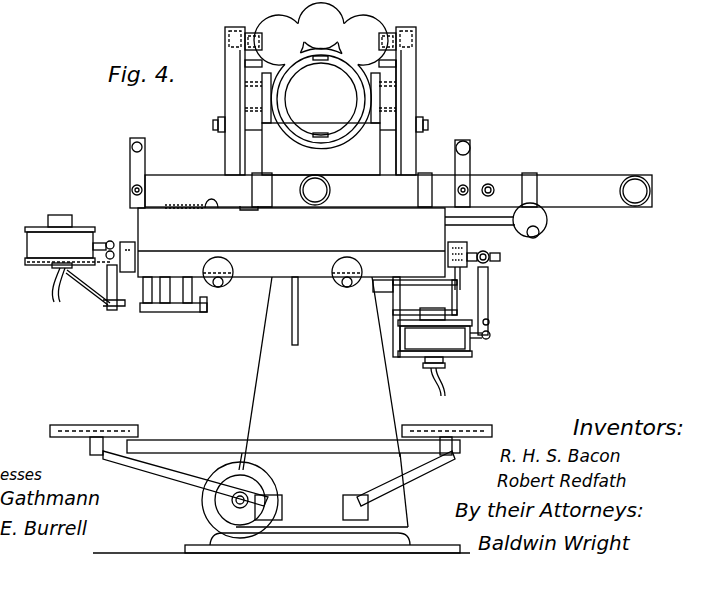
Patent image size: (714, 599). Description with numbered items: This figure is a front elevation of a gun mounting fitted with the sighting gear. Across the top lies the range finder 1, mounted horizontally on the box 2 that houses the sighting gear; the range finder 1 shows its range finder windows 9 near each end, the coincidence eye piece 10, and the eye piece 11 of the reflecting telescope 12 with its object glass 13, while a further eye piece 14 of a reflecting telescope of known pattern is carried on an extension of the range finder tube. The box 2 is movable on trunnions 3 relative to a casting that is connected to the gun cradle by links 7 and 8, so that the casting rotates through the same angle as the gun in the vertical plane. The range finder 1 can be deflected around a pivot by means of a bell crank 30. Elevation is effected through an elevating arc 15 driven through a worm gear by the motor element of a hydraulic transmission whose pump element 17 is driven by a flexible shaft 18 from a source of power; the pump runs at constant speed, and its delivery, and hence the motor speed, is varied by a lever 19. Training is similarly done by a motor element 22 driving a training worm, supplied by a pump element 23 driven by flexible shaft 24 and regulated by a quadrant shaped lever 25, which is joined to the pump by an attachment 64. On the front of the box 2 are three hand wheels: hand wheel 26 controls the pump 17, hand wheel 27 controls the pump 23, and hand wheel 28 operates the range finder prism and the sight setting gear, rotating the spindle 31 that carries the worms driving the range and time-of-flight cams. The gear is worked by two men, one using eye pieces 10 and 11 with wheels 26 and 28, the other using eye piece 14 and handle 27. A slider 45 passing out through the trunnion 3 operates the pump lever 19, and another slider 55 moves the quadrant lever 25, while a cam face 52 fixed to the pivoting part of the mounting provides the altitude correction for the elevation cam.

The range finder 1 is at (398, 190).
The box 2 is at (291, 242).
The trunnions 3 is at (460, 270).
The link 7 is at (420, 166).
The link 8 is at (226, 150).
The range finder windows 9 is at (316, 186).
The coincidence eye piece 10 is at (491, 185).
The eye piece of the reflecting telescope 11 is at (466, 186).
The reflecting telescope 12 is at (465, 167).
The object glass 13 is at (463, 141).
The eye piece of a reflecting telescope 14 is at (131, 147).
The elevating arc 15 is at (410, 142).
The pump element 17 is at (422, 322).
The flexible shaft 18 is at (443, 386).
The lever 19 is at (489, 292).
The motor element 22 is at (215, 500).
The pump element 23 is at (67, 240).
The flexible shaft 24 is at (81, 288).
The quadrant shaped lever 25 is at (111, 306).
The hand wheel 26 is at (348, 270).
The hand wheel 27 is at (218, 270).
The hand wheel 28 is at (547, 226).
The bell crank 30 is at (178, 205).
The spindle 31 is at (500, 226).
The slider 45 is at (484, 251).
The cam face 52 is at (291, 326).
The slider 55 is at (175, 305).
The attachment to the pump 64 is at (110, 241).